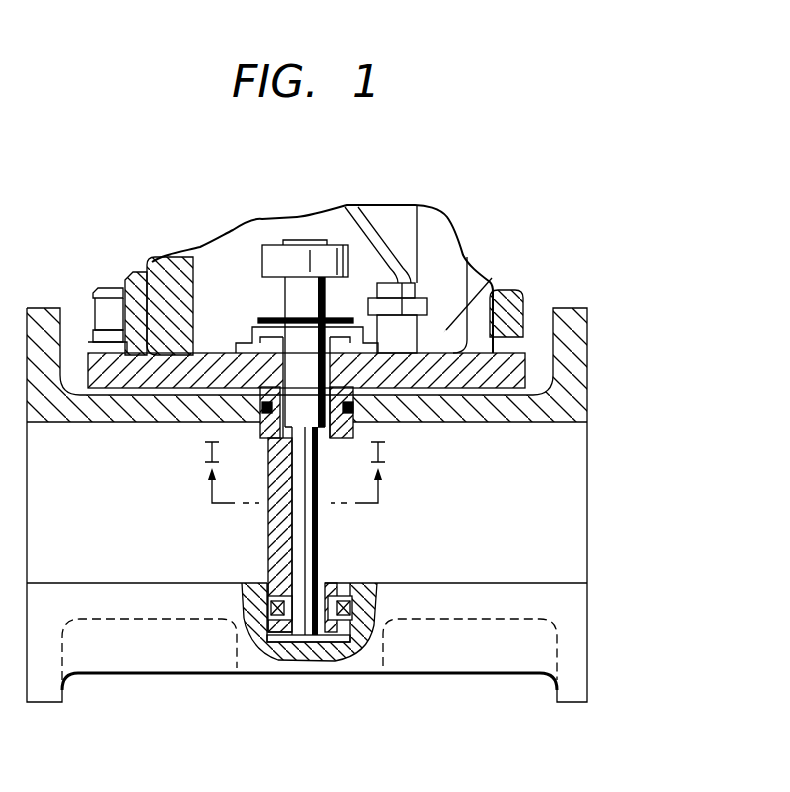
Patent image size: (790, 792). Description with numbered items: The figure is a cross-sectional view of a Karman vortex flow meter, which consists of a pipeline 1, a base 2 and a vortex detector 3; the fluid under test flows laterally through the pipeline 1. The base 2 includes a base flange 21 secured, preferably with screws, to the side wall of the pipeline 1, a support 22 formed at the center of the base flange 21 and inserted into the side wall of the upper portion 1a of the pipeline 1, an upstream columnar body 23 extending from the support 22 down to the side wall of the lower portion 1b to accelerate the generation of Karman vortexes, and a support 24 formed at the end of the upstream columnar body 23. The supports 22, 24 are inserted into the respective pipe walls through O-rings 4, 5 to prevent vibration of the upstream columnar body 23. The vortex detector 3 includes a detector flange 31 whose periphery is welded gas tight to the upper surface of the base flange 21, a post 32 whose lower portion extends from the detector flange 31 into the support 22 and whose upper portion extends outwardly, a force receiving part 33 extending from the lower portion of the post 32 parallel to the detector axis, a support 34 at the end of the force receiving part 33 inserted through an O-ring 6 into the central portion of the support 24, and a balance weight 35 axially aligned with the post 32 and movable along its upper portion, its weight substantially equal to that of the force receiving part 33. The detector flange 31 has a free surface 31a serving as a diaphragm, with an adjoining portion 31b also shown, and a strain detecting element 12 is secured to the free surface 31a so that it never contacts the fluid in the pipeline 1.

The pipeline 1 is at (342, 525).
The upper portion of pipeline 1a is at (568, 374).
The lower portion of pipeline 1b is at (575, 602).
The base 2 is at (493, 284).
The vortex detector 3 is at (346, 236).
The O-ring 4 is at (356, 423).
The O-ring 5 is at (366, 583).
The O-ring 6 is at (340, 645).
The strain detecting element 12 is at (262, 318).
The base flange 21 is at (493, 338).
The support 22 is at (260, 438).
The upstream columnar body 23 is at (280, 537).
The support 24 is at (272, 585).
The detector flange 31 is at (115, 288).
The free surface 31a is at (193, 257).
The fastening bolt 31b is at (147, 268).
The post 32 is at (280, 326).
The force receiving part 33 is at (320, 517).
The support 34 is at (306, 650).
The balance weight 35 is at (267, 243).